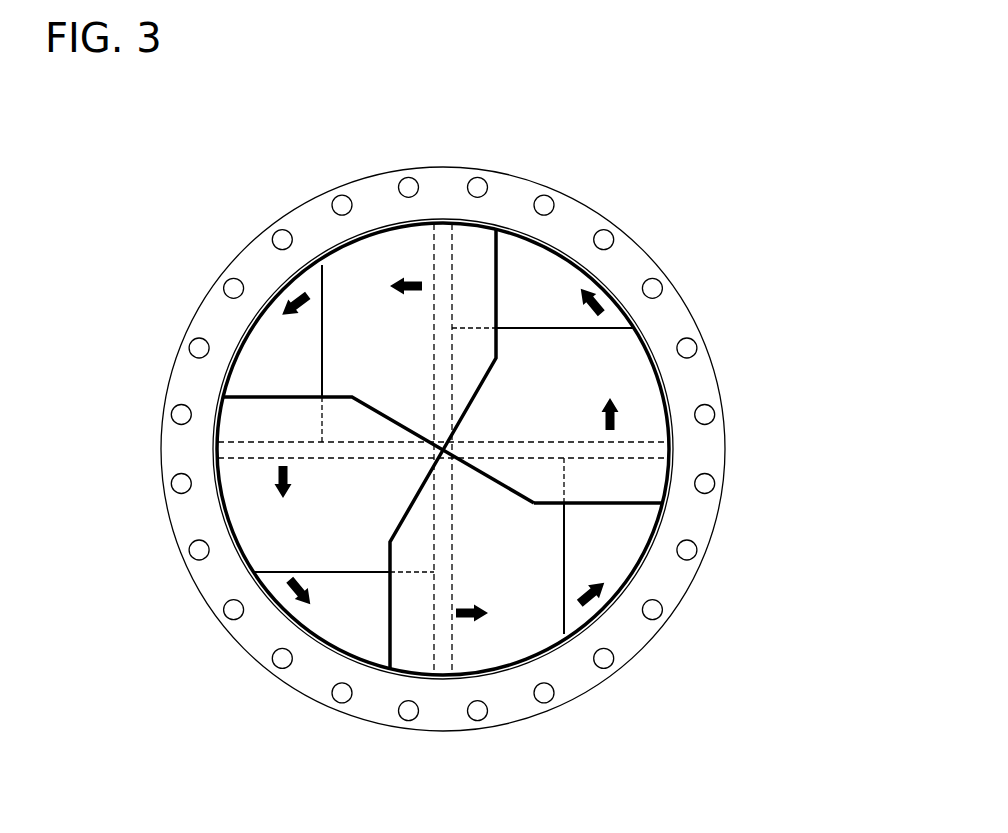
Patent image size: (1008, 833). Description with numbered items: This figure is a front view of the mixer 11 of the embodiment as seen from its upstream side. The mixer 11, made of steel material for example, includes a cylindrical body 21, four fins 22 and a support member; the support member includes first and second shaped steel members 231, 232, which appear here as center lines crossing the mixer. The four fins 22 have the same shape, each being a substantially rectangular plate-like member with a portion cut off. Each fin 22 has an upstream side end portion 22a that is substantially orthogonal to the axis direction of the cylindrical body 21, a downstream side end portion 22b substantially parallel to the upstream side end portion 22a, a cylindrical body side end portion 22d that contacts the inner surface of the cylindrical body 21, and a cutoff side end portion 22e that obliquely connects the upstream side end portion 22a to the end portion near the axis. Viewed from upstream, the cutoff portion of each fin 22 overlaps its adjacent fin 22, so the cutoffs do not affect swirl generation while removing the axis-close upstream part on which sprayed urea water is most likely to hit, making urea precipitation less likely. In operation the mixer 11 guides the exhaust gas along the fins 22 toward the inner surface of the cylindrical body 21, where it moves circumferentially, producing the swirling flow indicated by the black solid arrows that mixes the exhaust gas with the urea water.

The mixer 11 is at (157, 181).
The cylindrical body 21 is at (648, 247).
The fin 22 is at (638, 388).
The upstream side end portion 22a is at (612, 503).
The downstream side end portion 22b is at (553, 323).
The cylindrical body side end portion 22d is at (675, 427).
The cutoff side end portion 22e is at (498, 487).
The first shaped steel member 231 is at (220, 443).
The second shaped steel member 232 is at (434, 673).